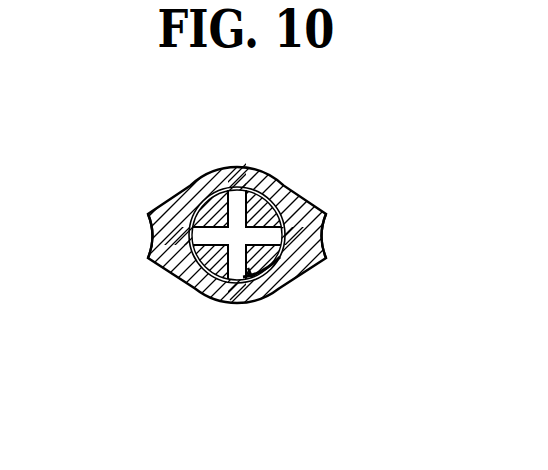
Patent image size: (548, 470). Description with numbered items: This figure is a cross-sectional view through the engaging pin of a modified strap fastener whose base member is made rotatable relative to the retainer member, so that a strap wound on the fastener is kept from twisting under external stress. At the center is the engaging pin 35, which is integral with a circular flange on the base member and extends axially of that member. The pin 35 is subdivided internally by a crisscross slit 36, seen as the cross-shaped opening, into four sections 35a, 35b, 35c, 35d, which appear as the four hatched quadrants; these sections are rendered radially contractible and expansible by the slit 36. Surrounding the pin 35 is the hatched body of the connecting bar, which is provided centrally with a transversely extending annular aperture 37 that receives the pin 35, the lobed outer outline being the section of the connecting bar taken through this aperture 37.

The engaging pin 35 is at (253, 188).
The section of the pin 35a is at (192, 188).
The section of the pin 35b is at (270, 198).
The section of the pin 35c is at (193, 282).
The section of the pin 35d is at (290, 275).
The crisscross slit 36 is at (240, 278).
The annular aperture 37 is at (270, 297).